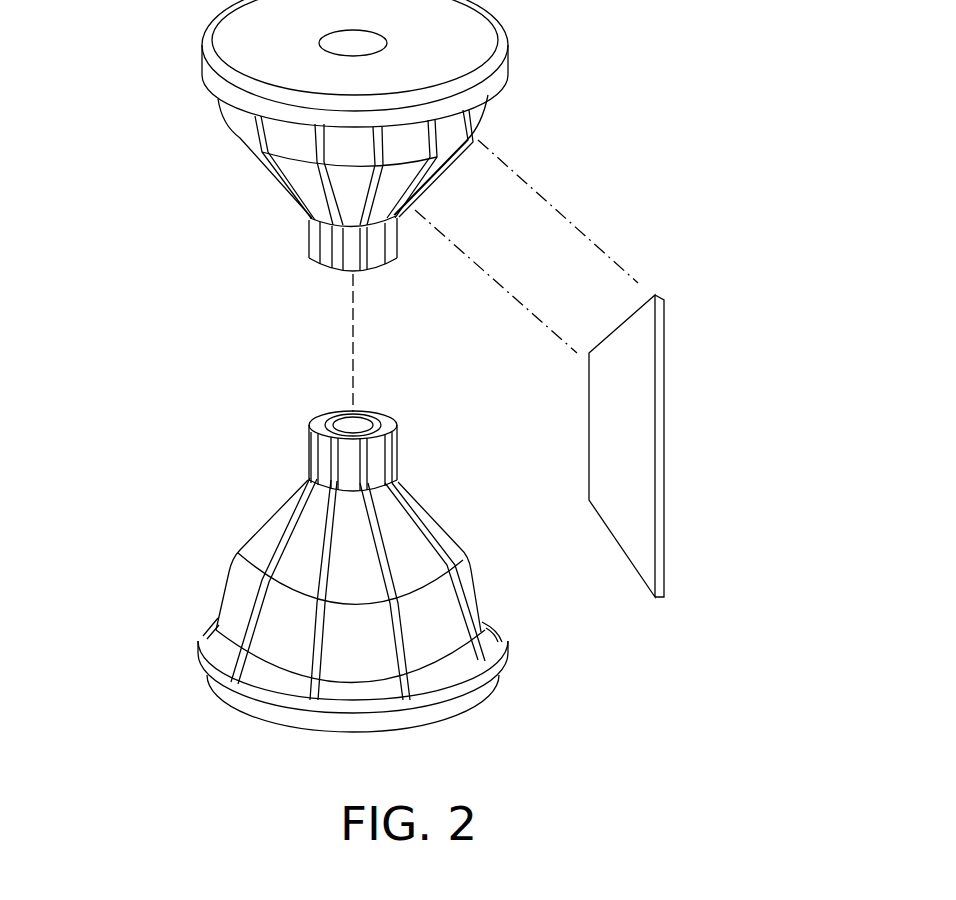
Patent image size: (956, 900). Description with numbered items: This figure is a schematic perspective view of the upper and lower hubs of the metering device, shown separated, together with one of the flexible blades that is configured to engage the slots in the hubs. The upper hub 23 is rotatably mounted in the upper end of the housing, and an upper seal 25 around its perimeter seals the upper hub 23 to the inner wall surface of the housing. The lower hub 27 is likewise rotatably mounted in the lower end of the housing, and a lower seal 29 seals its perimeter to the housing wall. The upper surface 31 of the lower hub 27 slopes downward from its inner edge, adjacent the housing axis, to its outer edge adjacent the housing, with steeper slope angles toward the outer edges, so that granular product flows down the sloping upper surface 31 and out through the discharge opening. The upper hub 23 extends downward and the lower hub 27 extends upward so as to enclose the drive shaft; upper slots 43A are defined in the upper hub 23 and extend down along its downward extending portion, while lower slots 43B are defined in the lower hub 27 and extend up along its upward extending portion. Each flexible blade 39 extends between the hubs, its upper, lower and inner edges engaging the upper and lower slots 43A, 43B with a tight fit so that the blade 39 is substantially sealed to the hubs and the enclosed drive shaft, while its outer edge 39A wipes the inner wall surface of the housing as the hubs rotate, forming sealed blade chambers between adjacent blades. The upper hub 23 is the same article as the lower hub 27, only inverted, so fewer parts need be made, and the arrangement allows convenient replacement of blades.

The upper hub 23 is at (237, 117).
The upper seal 25 is at (507, 76).
The lower hub 27 is at (237, 607).
The lower seal 29 is at (208, 683).
The upper surface 31 is at (437, 622).
The flexible blade 39 is at (658, 293).
The outer edge 39A is at (664, 412).
The upper slots 43A is at (320, 182).
The lower slots 43B is at (327, 537).